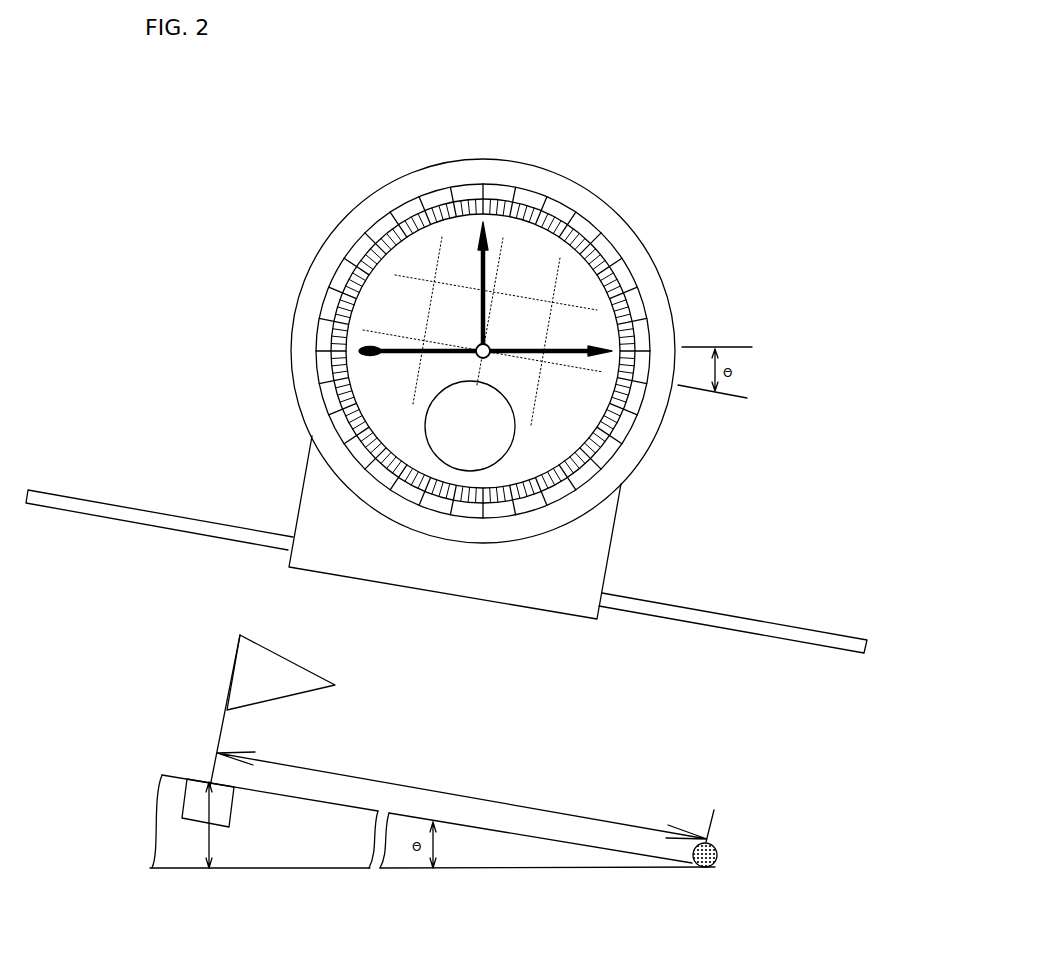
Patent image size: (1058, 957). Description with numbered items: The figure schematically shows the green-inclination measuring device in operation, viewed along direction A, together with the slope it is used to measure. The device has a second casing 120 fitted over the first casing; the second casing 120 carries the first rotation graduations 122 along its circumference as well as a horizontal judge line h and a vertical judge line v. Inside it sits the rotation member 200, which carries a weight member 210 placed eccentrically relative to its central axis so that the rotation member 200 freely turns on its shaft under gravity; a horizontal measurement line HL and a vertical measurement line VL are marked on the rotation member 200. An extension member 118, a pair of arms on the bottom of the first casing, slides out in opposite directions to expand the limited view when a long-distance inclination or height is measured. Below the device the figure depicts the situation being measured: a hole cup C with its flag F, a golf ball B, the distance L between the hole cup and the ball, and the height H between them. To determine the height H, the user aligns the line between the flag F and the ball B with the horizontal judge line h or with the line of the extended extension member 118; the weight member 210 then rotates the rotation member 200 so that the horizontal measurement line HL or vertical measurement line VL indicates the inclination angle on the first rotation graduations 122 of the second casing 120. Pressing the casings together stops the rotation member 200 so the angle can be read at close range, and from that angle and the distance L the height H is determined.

The second casing 120 is at (530, 163).
The first rotation graduations 122 is at (650, 325).
The rotation member 200 is at (395, 368).
The weight member 210 is at (483, 433).
The extension member 118 is at (780, 640).
The vertical measurement line VL is at (490, 307).
The horizontal measurement line HL is at (533, 352).
The vertical judge line v is at (500, 258).
The horizontal judge line h is at (563, 305).
The section view direction A is at (265, 312).
The flag F is at (272, 711).
The hole cup C is at (162, 775).
The height H is at (202, 825).
The distance L is at (465, 797).
The golf ball B is at (720, 852).